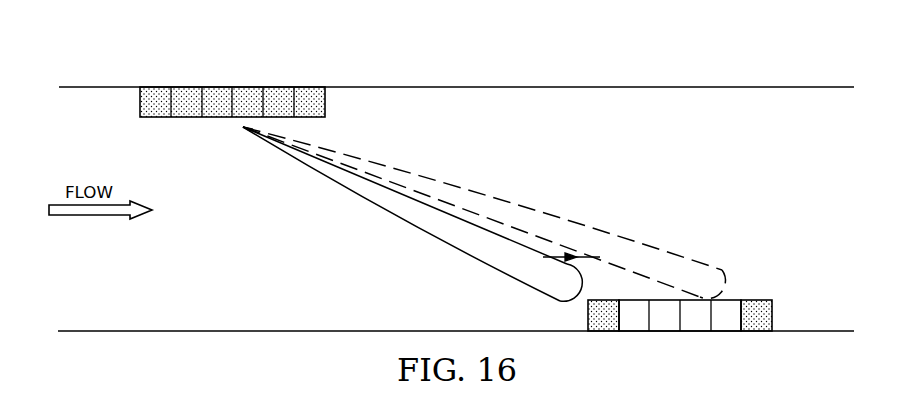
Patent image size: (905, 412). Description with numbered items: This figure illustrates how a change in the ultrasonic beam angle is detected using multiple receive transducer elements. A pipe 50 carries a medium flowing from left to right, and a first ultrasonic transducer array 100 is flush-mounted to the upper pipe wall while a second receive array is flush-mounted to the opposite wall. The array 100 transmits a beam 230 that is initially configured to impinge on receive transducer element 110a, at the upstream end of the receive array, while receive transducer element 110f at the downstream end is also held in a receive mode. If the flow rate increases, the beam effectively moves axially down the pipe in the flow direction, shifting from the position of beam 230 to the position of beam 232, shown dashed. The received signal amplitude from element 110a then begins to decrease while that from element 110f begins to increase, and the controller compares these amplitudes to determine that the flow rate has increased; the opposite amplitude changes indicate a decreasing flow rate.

The pipe 50 is at (102, 87).
The first ultrasonic transducer array 100 is at (186, 118).
The receive transducer element 110a is at (602, 322).
The receive transducer element 110f is at (756, 322).
The beam 230 is at (450, 243).
The beam 232 is at (528, 208).